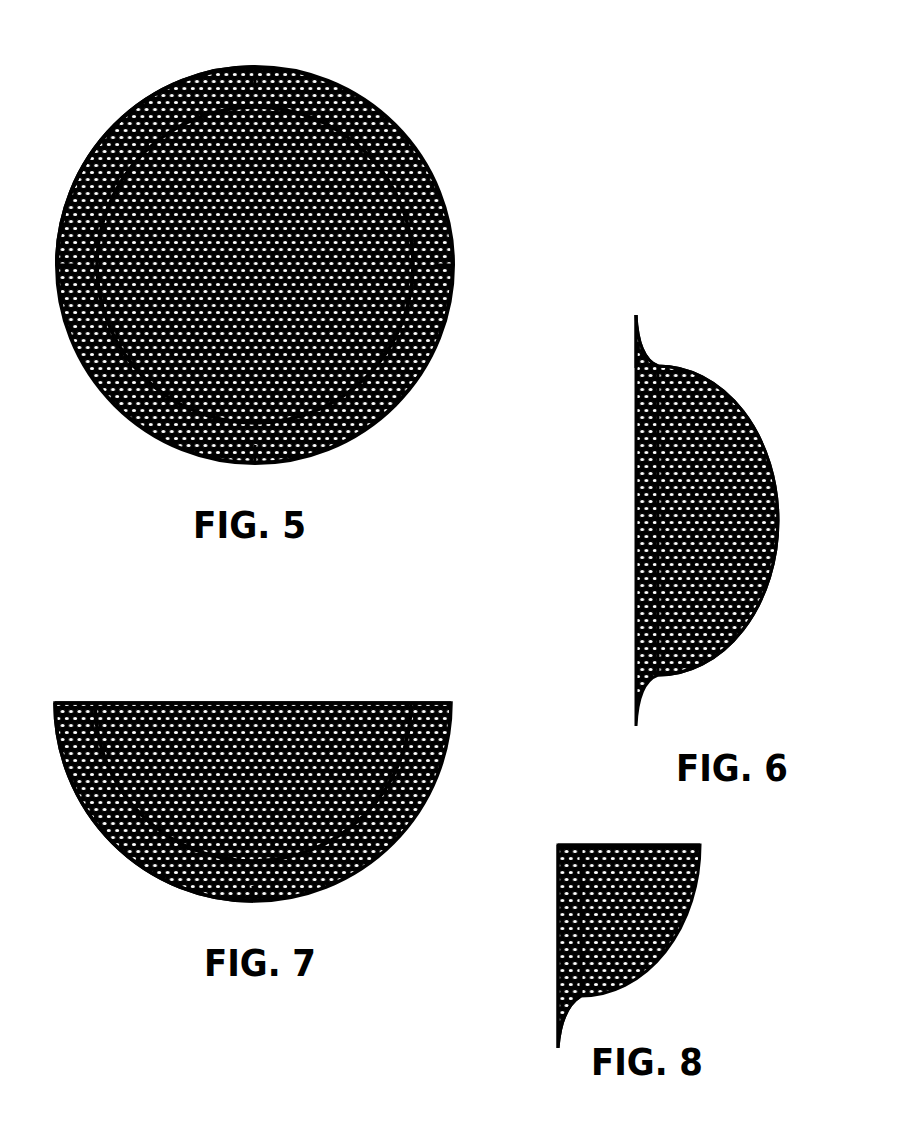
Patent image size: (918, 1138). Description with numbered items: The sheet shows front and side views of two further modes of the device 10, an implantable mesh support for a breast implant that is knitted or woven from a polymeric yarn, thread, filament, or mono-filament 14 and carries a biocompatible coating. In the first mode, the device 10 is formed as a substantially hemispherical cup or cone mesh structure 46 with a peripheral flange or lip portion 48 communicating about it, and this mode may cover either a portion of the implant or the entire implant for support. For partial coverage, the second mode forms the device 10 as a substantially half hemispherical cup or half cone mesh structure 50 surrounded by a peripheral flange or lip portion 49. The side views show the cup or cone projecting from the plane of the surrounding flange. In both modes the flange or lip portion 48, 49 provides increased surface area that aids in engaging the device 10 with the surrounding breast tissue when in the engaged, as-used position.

In FIG. 5, the device 10 is at (490, 112).
In FIG. 6, the device 10 is at (735, 300).
In FIG. 7, the device 10 is at (412, 585).
In FIG. 8, the device 10 is at (448, 1035).
In FIG. 5, the filament 14 is at (362, 127).
In FIG. 6, the filament 14 is at (735, 613).
In FIG. 7, the filament 14 is at (422, 733).
In FIG. 8, the filament 14 is at (633, 910).
In FIG. 5, the hemispherical cup or cone mesh structure 46 is at (137, 110).
In FIG. 6, the hemispherical cup or cone mesh structure 46 is at (757, 438).
In FIG. 5, the peripheral flange or lip portion 48 is at (213, 62).
In FIG. 6, the peripheral flange or lip portion 48 is at (630, 338).
In FIG. 7, the peripheral flange or lip portion 49 is at (88, 817).
In FIG. 8, the peripheral flange or lip portion 49 is at (550, 935).
In FIG. 7, the half hemispherical cup or half cone mesh structure 50 is at (295, 695).
In FIG. 8, the half hemispherical cup or half cone mesh structure 50 is at (692, 863).